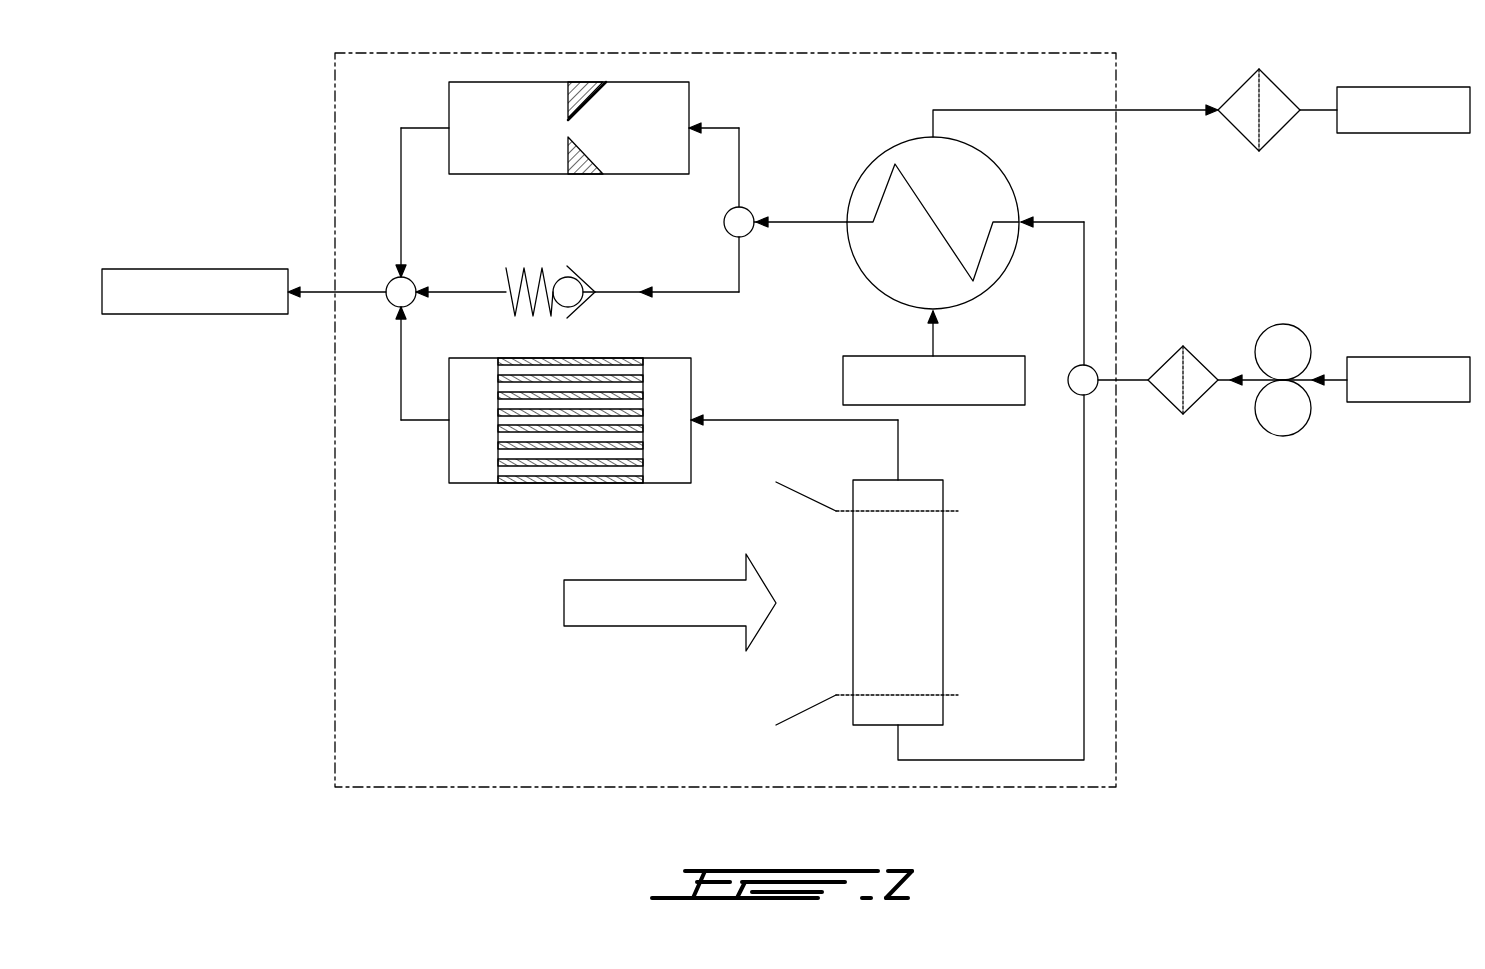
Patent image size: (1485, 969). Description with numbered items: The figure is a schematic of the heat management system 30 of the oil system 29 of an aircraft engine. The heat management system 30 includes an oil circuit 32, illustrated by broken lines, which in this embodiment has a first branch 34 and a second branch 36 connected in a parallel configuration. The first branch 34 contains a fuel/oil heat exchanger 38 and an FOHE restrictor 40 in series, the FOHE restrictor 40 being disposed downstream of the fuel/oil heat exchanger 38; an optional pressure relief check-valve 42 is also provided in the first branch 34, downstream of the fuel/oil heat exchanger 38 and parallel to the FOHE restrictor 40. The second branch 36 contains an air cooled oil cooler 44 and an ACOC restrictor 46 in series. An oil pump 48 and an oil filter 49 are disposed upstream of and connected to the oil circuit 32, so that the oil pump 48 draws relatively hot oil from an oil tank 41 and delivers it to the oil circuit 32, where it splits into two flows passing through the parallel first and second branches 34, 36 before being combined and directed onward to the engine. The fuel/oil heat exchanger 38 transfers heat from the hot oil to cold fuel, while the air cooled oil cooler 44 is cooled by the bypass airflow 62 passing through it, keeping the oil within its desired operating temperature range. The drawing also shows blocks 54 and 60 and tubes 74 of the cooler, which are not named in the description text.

The oil system 29 is at (608, 420).
The heat management system 30 is at (608, 420).
The oil circuit 32 is at (334, 187).
The first branch 34 is at (1084, 258).
The second branch 36 is at (1084, 593).
The fuel/oil heat exchanger 38 is at (993, 152).
The FOHE restrictor 40 is at (667, 82).
The oil tank 41 is at (1407, 402).
The check-valve 42 is at (585, 305).
The air cooled oil cooler 44 is at (943, 570).
The ACOC restrictor 46 is at (570, 412).
The oil pump 48 is at (1303, 423).
The oil filter 49 is at (1200, 358).
The component 54 is at (195, 314).
The component 60 is at (1383, 133).
The bypass airflow 62 is at (633, 626).
The tubes 74 is at (505, 471).